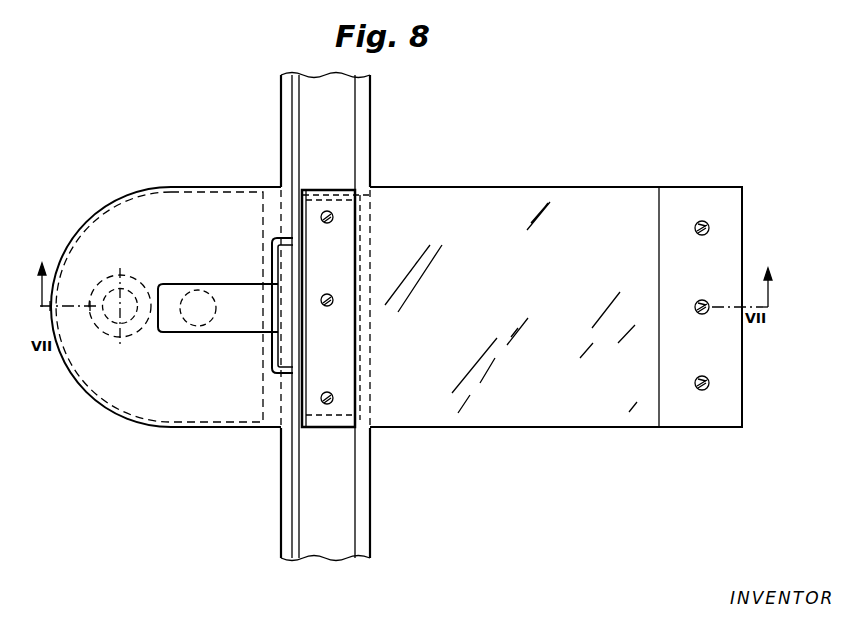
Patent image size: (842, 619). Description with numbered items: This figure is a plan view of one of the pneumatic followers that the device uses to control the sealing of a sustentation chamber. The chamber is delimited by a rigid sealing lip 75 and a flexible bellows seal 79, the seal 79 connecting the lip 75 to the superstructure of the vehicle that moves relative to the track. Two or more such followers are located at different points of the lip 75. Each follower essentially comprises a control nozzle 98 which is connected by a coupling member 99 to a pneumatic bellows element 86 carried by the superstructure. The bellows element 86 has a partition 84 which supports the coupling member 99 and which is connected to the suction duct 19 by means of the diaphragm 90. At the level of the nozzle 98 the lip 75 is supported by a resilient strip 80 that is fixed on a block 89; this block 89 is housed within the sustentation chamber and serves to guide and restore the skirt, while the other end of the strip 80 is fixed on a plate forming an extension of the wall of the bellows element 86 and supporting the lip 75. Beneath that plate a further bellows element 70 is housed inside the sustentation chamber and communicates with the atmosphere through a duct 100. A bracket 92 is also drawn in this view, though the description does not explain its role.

The suction duct 19 is at (117, 341).
The bellows element 70 is at (372, 250).
The rigid sealing lip 75 is at (298, 133).
The flexible bellows seal 79 is at (283, 140).
The resilient strip 80 is at (498, 206).
The partition 84 is at (155, 203).
The pneumatic bellows element 86 is at (114, 418).
The block 89 is at (688, 257).
The diaphragm 90 is at (128, 283).
The mounting bracket 92 is at (340, 353).
The control nozzle 98 is at (284, 333).
The coupling member 99 is at (232, 300).
The duct 100 is at (329, 292).